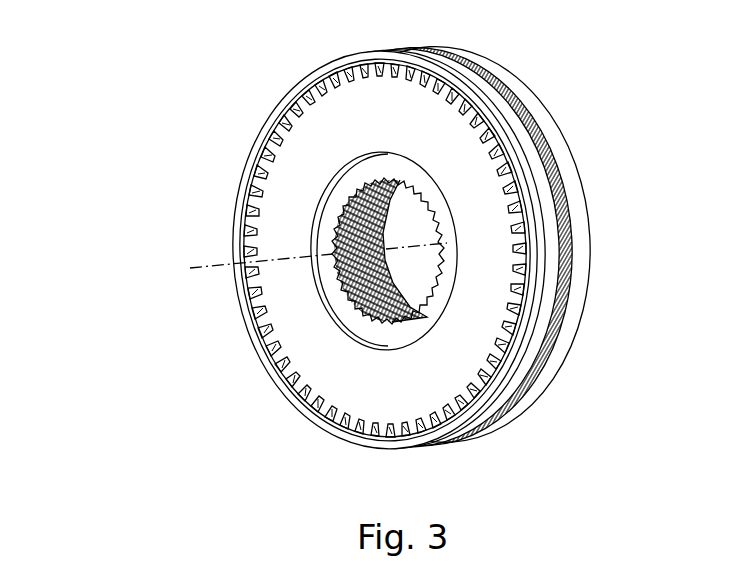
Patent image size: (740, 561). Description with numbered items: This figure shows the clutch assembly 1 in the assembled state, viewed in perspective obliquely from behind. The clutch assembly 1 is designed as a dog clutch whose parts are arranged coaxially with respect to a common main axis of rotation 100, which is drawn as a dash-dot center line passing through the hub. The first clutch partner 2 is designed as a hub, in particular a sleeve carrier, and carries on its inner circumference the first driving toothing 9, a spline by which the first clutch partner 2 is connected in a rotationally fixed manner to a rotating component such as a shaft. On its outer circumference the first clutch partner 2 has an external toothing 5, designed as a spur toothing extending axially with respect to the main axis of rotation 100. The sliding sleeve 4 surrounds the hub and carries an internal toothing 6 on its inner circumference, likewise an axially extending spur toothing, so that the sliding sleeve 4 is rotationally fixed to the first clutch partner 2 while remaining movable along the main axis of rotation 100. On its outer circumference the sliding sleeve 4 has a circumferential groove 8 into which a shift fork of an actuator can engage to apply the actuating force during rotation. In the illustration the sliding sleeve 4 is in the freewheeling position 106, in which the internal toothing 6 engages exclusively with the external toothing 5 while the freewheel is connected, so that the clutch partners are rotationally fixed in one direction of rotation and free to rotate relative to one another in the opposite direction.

The clutch assembly 1 is at (160, 117).
The freewheeling position 106 is at (160, 117).
The first clutch partner 2 is at (375, 402).
The sliding sleeve 4 is at (568, 349).
The external toothing 5 is at (280, 347).
The internal toothing 6 is at (252, 283).
The circumferential groove 8 is at (516, 138).
The first driving toothing 9 is at (360, 177).
The main axis of rotation 100 is at (190, 268).